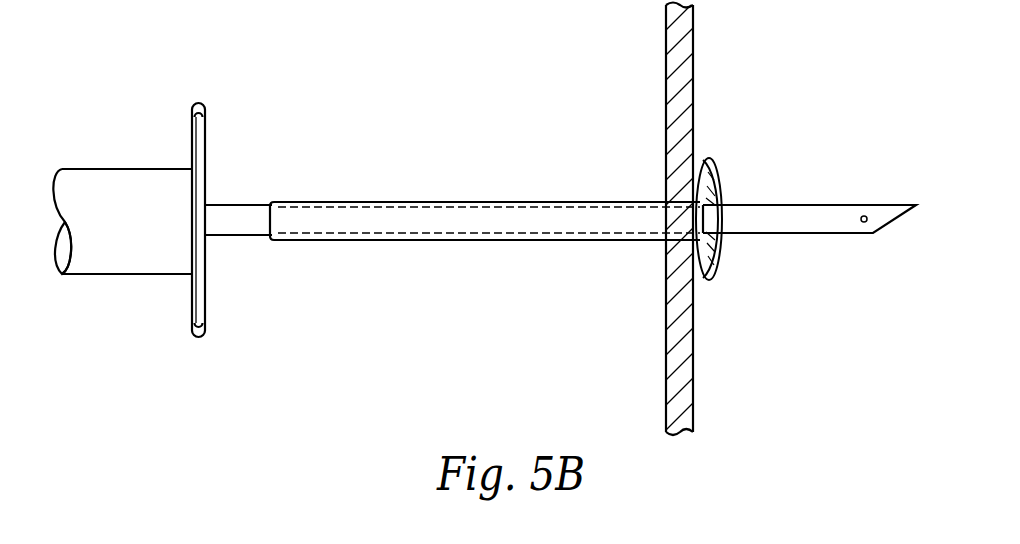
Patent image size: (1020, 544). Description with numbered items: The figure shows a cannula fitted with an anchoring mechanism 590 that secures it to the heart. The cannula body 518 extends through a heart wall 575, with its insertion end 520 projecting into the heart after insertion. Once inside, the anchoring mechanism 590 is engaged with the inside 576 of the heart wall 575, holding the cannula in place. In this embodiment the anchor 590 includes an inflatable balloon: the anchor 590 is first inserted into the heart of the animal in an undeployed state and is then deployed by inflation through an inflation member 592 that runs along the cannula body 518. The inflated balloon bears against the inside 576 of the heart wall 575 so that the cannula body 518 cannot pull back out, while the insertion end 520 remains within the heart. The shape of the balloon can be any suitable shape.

The cannula body 518 is at (449, 206).
The inflation member 592 is at (380, 202).
The heart wall 575 is at (666, 65).
The inside of heart wall 576 is at (693, 67).
The anchoring mechanism 590 is at (707, 158).
The insertion end 520 is at (873, 194).